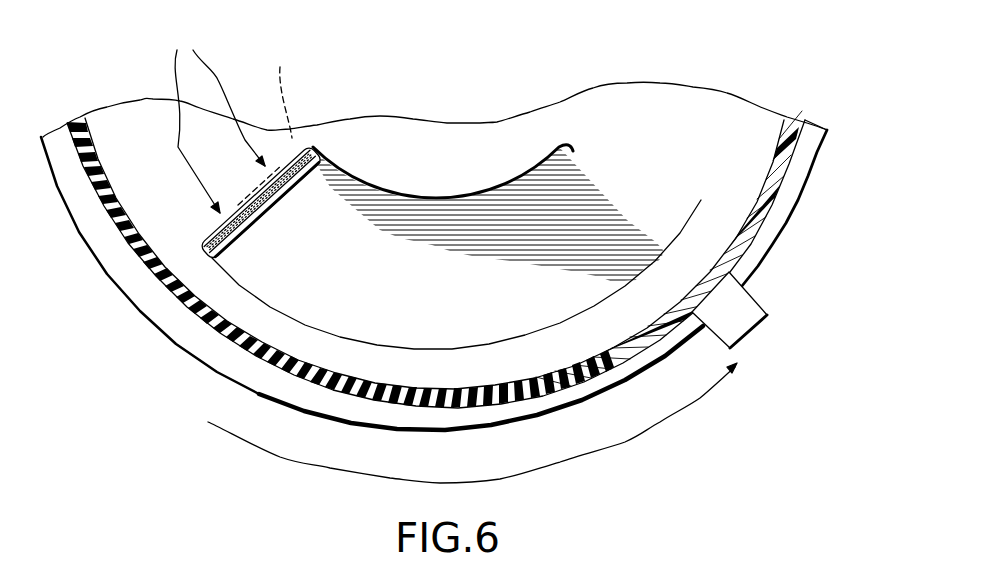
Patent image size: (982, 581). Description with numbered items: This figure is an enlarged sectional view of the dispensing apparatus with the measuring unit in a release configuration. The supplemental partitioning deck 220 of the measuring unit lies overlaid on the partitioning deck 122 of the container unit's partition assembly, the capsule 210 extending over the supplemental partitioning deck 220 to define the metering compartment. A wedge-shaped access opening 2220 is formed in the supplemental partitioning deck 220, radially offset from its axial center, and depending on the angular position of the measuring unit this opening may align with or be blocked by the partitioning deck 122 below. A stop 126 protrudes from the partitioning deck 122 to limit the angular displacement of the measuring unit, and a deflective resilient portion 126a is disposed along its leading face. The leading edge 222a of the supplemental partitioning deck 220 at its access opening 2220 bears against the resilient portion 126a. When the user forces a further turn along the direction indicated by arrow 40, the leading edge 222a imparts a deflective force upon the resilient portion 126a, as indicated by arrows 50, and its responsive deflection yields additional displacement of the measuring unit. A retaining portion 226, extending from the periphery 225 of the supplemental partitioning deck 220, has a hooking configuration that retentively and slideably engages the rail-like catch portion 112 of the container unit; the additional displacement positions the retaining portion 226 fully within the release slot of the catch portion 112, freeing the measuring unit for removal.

The direction arrow 40 is at (625, 442).
The deflective force arrows 50 is at (219, 117).
The catch portion 112 is at (797, 178).
The partitioning deck 122 is at (563, 173).
The stop 126 is at (273, 207).
The deflective resilient portion 126a is at (207, 257).
The capsule 210 is at (103, 207).
The supplemental partitioning deck 220 is at (703, 120).
The leading edge 222a is at (279, 122).
The periphery 225 is at (215, 357).
The retaining portion 226 is at (735, 315).
The access opening 2220 is at (437, 270).